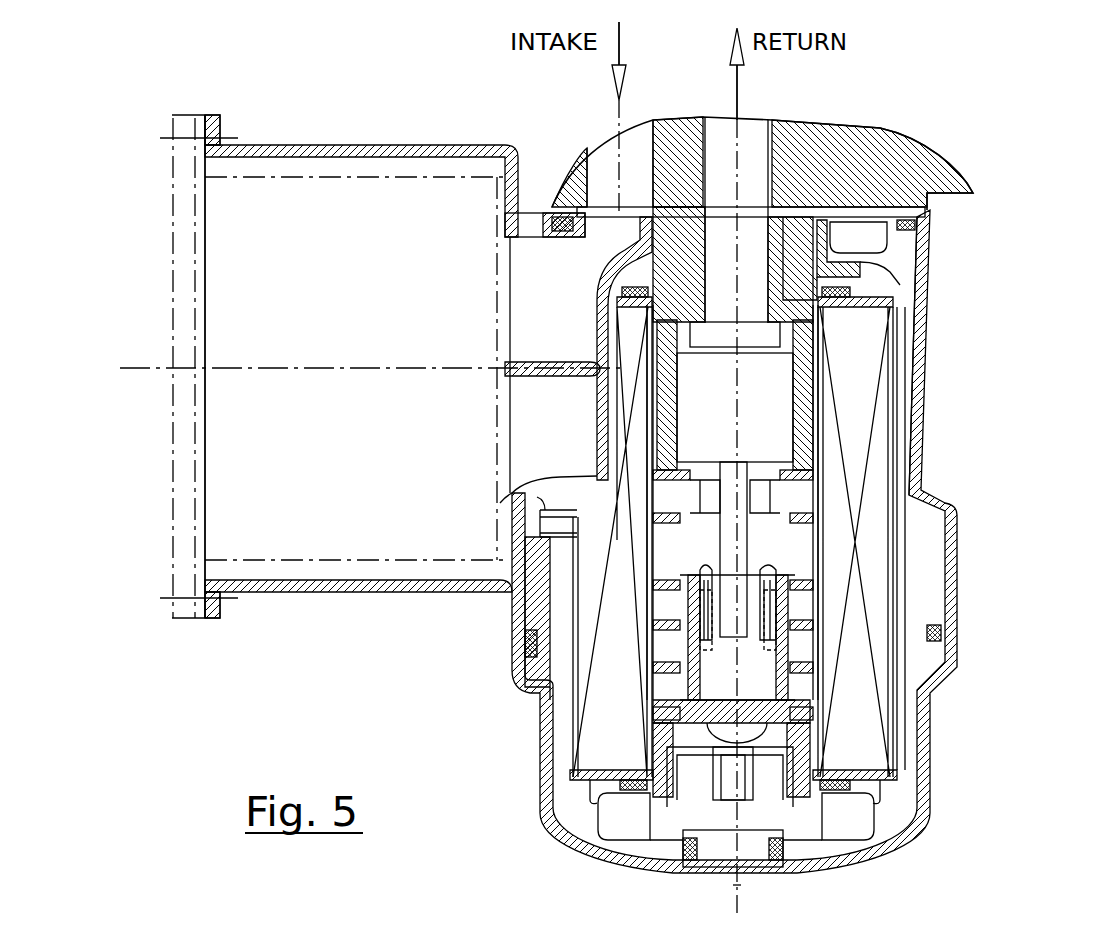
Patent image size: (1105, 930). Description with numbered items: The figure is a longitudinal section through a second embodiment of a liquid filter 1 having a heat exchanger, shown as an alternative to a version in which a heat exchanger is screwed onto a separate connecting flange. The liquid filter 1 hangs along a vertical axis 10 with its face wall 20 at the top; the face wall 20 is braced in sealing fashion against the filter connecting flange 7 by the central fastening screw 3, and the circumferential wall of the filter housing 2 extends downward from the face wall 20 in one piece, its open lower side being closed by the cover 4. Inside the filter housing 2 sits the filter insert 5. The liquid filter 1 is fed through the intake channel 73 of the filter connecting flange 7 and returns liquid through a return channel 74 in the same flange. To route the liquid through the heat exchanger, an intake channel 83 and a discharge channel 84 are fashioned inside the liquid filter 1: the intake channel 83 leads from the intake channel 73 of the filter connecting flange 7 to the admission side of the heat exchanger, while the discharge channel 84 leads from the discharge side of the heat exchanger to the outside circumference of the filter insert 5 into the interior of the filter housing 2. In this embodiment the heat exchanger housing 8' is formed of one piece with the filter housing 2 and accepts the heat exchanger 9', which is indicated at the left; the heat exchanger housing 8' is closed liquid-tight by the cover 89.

The liquid filter 1 is at (950, 384).
The filter housing 2 is at (950, 334).
The central fastening screw 3 is at (822, 315).
The cover 4 is at (925, 815).
The filter insert 5 is at (912, 464).
The filter connecting flange 7 is at (945, 207).
The vertical axis 10 is at (740, 897).
The face wall 20 is at (872, 264).
The intake channel 73 is at (633, 143).
The return passage 74 is at (748, 150).
The intake channel 83 is at (536, 272).
The discharge channel 84 is at (575, 420).
The cover 89 is at (174, 518).
The heat exchanger housing 8' is at (364, 351).
The heat exchanger 9' is at (339, 352).